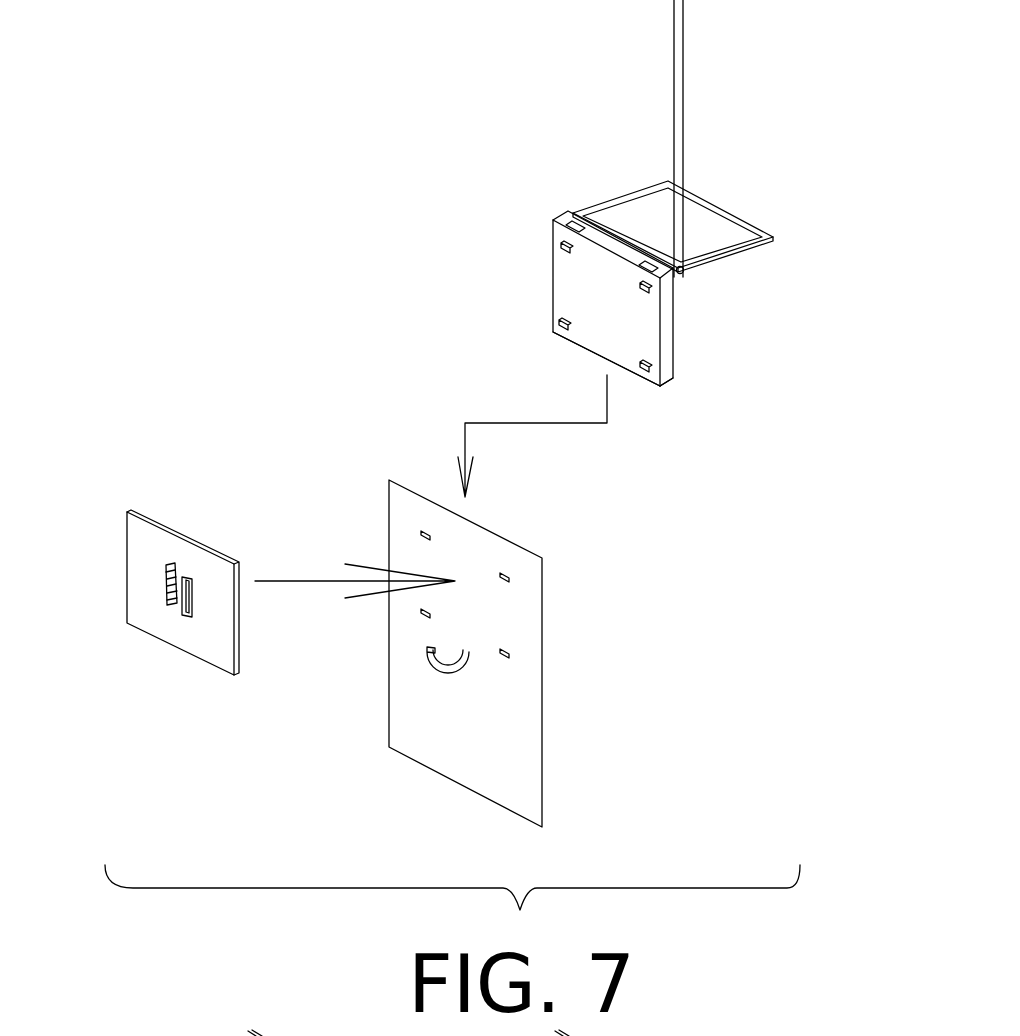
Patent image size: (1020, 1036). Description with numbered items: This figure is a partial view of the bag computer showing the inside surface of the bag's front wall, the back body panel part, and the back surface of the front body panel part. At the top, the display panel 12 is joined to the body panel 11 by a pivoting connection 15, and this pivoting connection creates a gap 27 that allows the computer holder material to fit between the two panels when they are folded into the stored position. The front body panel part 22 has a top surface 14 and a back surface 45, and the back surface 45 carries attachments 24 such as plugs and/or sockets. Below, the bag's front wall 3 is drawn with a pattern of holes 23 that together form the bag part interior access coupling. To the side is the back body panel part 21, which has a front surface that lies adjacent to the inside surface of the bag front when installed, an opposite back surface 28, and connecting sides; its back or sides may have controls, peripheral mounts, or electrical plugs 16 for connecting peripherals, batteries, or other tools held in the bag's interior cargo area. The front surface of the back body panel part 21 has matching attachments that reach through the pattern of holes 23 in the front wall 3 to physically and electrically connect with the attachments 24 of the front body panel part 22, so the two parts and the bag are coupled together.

The gap 27 is at (600, 25).
The display panel 12 is at (630, 180).
The top surface 14 is at (557, 215).
The pivoting connection 15 is at (683, 272).
The front body panel part 22 is at (565, 348).
The back surface 45 is at (640, 325).
The body panel 11 is at (667, 388).
The attachments 24 is at (640, 366).
The back body panel part 21 is at (202, 535).
The electrical plugs 16 is at (172, 605).
The back surface 28 is at (213, 635).
The bag front wall 3 is at (545, 705).
The pattern of holes 23 is at (509, 655).